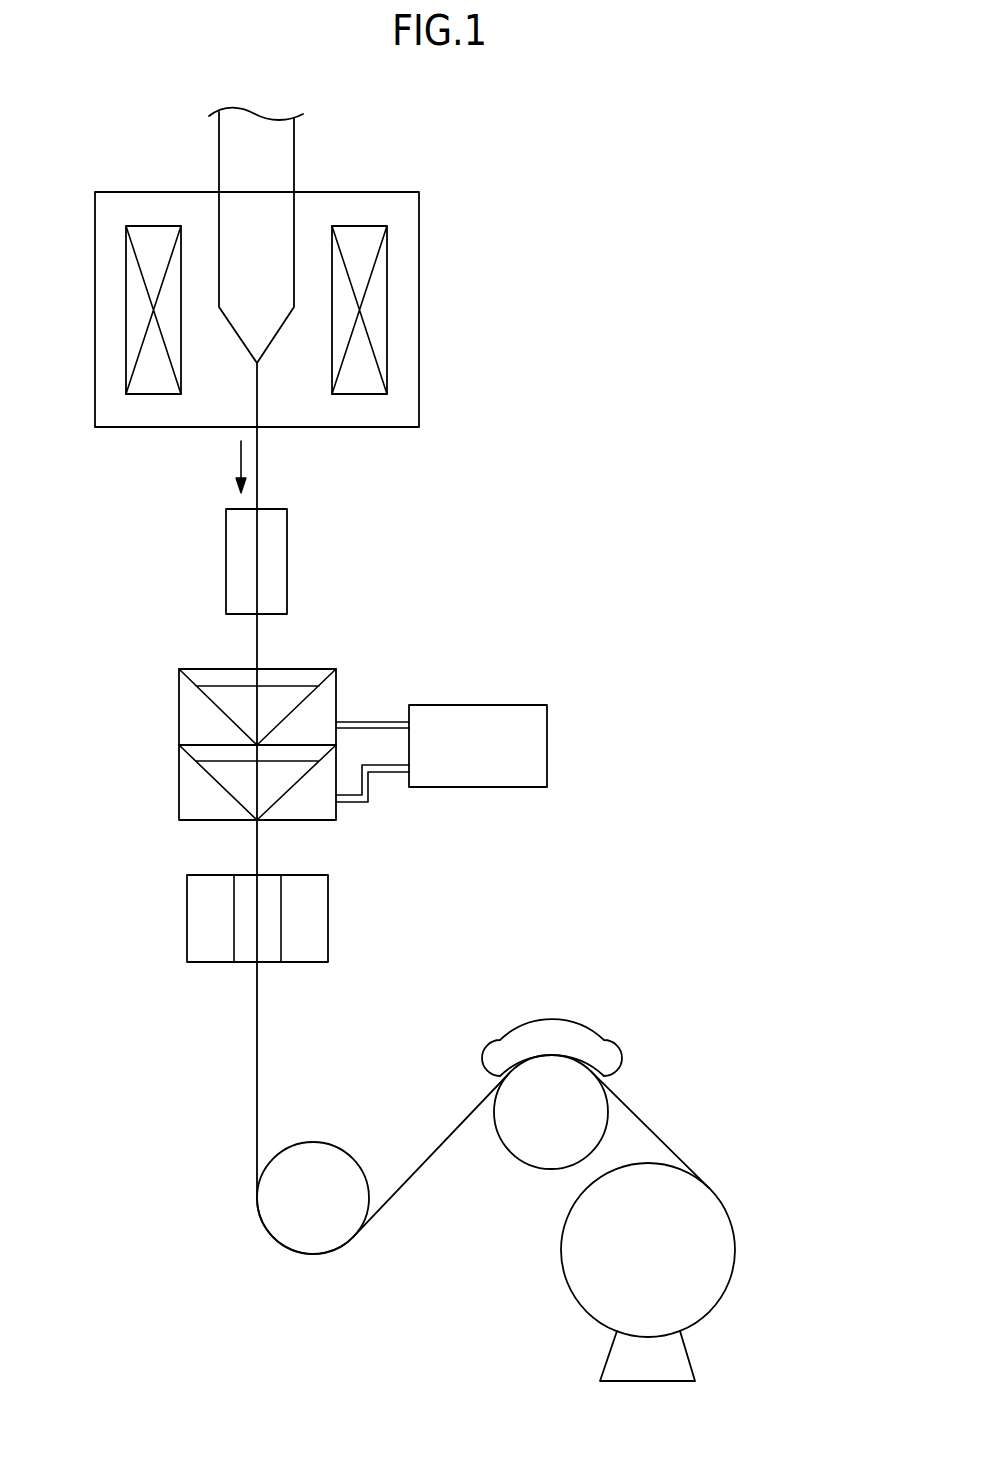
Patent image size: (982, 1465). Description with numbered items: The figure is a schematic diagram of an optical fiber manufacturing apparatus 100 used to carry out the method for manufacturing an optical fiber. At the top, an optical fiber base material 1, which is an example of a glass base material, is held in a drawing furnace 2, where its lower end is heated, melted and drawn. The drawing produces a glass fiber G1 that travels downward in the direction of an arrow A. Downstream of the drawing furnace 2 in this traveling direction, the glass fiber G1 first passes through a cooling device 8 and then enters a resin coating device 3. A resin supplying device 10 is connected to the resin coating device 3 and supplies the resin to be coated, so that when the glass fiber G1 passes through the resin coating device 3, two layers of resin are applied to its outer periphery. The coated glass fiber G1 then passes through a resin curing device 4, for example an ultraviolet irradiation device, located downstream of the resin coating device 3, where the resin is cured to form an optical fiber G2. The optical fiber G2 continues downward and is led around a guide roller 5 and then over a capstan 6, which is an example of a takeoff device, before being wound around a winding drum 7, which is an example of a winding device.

The optical fiber manufacturing apparatus 100 is at (616, 197).
The optical fiber base material 1 is at (294, 150).
The drawing furnace 2 is at (419, 215).
The arrow A is at (238, 463).
The glass fiber G1 is at (258, 462).
The cooling device 8 is at (287, 560).
The resin coating device 3 is at (336, 690).
The resin supplying device 10 is at (513, 705).
The resin curing device 4 is at (328, 915).
The optical fiber G2 is at (257, 1057).
The guide roller 5 is at (316, 1142).
The capstan 6 is at (556, 1018).
The winding drum 7 is at (735, 1250).